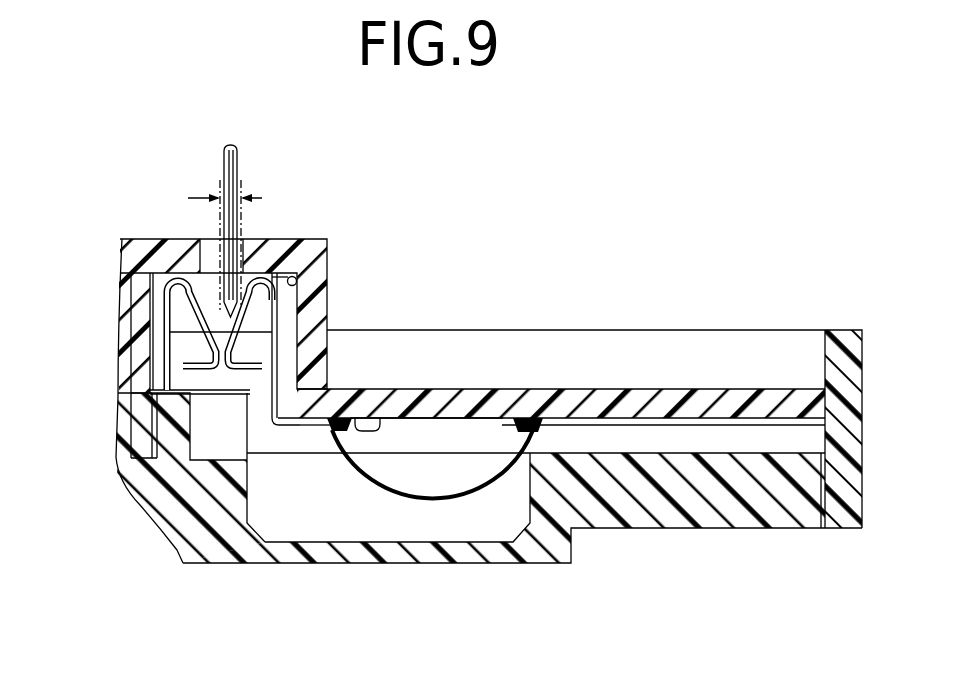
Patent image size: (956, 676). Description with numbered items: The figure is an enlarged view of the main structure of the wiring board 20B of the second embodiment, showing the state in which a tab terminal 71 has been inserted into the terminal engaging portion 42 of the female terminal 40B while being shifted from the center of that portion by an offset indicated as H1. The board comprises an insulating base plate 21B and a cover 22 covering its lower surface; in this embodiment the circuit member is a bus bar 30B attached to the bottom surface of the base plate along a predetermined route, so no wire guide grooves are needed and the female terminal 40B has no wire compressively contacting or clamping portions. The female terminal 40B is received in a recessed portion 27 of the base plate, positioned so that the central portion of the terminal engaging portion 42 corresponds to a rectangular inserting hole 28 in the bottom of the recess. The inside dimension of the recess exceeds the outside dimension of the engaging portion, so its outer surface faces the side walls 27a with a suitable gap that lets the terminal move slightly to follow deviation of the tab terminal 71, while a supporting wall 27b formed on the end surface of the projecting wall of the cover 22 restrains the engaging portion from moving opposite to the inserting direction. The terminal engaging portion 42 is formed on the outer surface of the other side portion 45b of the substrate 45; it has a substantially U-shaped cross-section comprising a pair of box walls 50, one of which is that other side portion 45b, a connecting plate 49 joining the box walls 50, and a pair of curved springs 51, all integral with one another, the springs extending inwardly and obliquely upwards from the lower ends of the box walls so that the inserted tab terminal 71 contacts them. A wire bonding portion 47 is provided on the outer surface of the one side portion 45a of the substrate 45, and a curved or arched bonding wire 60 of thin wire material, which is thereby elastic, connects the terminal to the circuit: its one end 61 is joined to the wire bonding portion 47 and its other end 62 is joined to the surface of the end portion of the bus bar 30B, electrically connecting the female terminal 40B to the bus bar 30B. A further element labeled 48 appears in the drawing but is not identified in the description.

The wiring board 20B is at (558, 248).
The base plate 21B is at (664, 388).
The cover 22 is at (746, 531).
The recessed portion 27 is at (140, 386).
The side walls 27a is at (299, 283).
The supporting wall 27b is at (114, 468).
The inserting hole 28 is at (203, 254).
The bus bar 30B is at (613, 428).
The female terminal 40B is at (209, 402).
The terminal engaging portion 42 is at (148, 292).
The substrate 45 is at (350, 424).
The one side portion 45a is at (280, 432).
The other side portion 45b is at (279, 360).
The wire bonding portion 47 is at (408, 420).
The spring ledge 48 is at (281, 330).
The connecting plate 49 is at (251, 348).
The box walls 50 is at (118, 431).
The curved springs 51 is at (253, 303).
The bonding wire 60 is at (431, 498).
The one end 61 is at (334, 434).
The other end 62 is at (531, 436).
The tab terminal 71 is at (238, 152).
The pin height dimension H1 is at (236, 235).